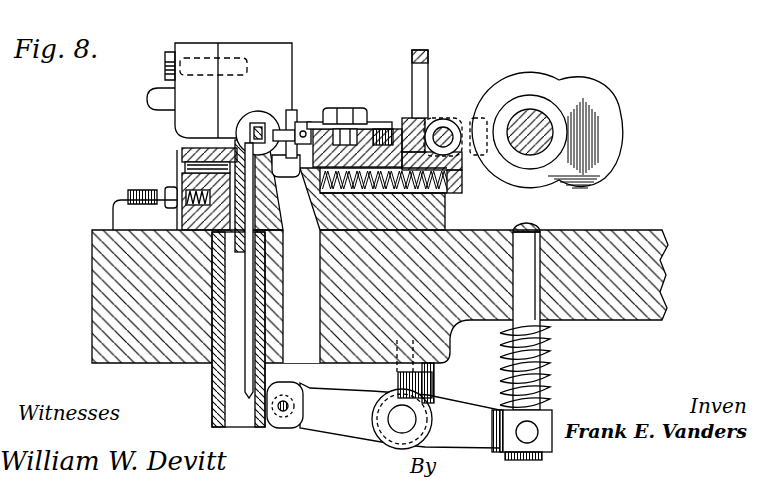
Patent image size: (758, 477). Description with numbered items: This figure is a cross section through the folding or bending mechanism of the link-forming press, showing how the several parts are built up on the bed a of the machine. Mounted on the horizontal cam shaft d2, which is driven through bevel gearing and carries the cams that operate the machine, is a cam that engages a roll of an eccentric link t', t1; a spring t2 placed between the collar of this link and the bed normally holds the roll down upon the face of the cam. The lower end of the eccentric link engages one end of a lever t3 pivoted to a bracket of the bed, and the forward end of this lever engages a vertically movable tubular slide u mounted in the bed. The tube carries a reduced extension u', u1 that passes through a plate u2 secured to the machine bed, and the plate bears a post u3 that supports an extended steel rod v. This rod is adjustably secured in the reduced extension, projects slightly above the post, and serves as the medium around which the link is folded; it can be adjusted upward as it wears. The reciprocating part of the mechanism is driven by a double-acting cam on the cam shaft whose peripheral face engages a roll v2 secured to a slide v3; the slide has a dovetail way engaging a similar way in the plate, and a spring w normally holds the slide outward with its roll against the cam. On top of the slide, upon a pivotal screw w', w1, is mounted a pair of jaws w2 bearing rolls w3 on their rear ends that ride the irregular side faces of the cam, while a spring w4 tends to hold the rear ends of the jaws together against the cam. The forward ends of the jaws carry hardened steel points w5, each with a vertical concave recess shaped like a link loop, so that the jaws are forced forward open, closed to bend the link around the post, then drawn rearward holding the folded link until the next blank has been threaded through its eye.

The bed a is at (647, 290).
The tubular slide u is at (219, 329).
The reduced extension u' is at (171, 195).
The reduced extension u1 is at (185, 176).
The plate u2 is at (180, 148).
The post u3 is at (233, 145).
The rod v is at (247, 123).
The roll v2 is at (448, 118).
The slide v3 is at (450, 192).
The spring w is at (542, 131).
The pivotal screw w' is at (345, 104).
The pivotal screw w1 is at (345, 117).
The jaws w2 is at (322, 120).
The rolls w3 is at (484, 118).
The spring w4 is at (424, 73).
The hardened steel points w5 is at (287, 127).
The cam shaft d2 is at (547, 123).
The eccentric link t' is at (545, 309).
The eccentric link t1 is at (542, 237).
The spring t2 is at (550, 375).
The lever t3 is at (409, 400).